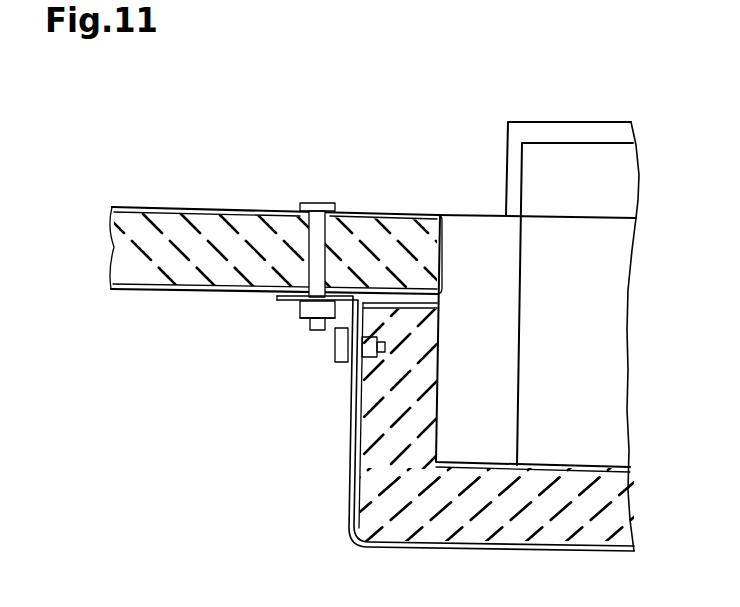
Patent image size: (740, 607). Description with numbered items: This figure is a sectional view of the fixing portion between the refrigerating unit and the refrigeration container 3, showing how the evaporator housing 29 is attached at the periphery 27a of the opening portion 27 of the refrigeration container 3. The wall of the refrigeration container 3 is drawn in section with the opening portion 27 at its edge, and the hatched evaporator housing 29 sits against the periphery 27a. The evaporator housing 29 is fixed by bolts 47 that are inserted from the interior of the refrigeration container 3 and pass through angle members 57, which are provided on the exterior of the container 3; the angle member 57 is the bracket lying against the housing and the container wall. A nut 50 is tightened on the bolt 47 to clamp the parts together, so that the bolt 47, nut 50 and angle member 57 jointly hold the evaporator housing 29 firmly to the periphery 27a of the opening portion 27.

The refrigeration container 3 is at (135, 232).
The opening portion 27 is at (464, 161).
The periphery of the opening portion 27a is at (386, 207).
The evaporator housing 29 is at (375, 448).
The bolt 47 is at (306, 258).
The nut 50 is at (310, 312).
The angle member 57 is at (345, 322).